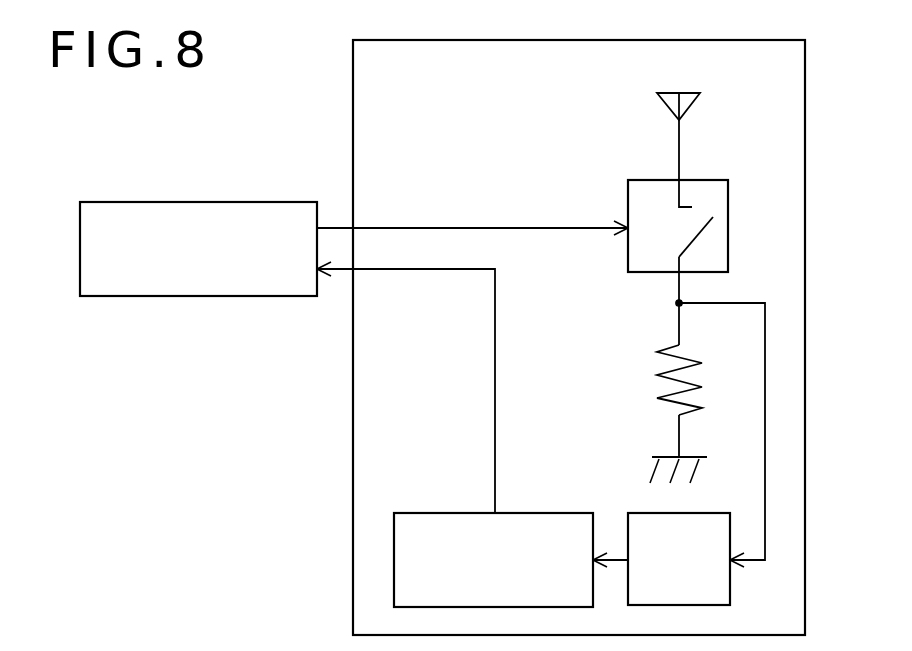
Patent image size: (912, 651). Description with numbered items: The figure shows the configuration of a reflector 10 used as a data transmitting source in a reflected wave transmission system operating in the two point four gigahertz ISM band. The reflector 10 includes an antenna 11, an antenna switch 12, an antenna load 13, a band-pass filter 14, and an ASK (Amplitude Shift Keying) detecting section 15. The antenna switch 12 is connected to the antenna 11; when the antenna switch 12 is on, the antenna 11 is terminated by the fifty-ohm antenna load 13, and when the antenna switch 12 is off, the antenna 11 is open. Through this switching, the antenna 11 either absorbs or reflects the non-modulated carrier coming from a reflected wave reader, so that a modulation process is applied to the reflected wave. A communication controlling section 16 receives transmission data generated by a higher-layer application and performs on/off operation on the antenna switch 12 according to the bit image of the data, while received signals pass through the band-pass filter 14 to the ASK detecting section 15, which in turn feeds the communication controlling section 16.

The reflector 10 is at (805, 75).
The antenna 11 is at (697, 100).
The antenna switch 12 is at (728, 223).
The antenna load 13 is at (652, 382).
The band-pass filter 14 is at (710, 513).
The ASK detecting section 15 is at (575, 513).
The communication controlling section 16 is at (267, 202).